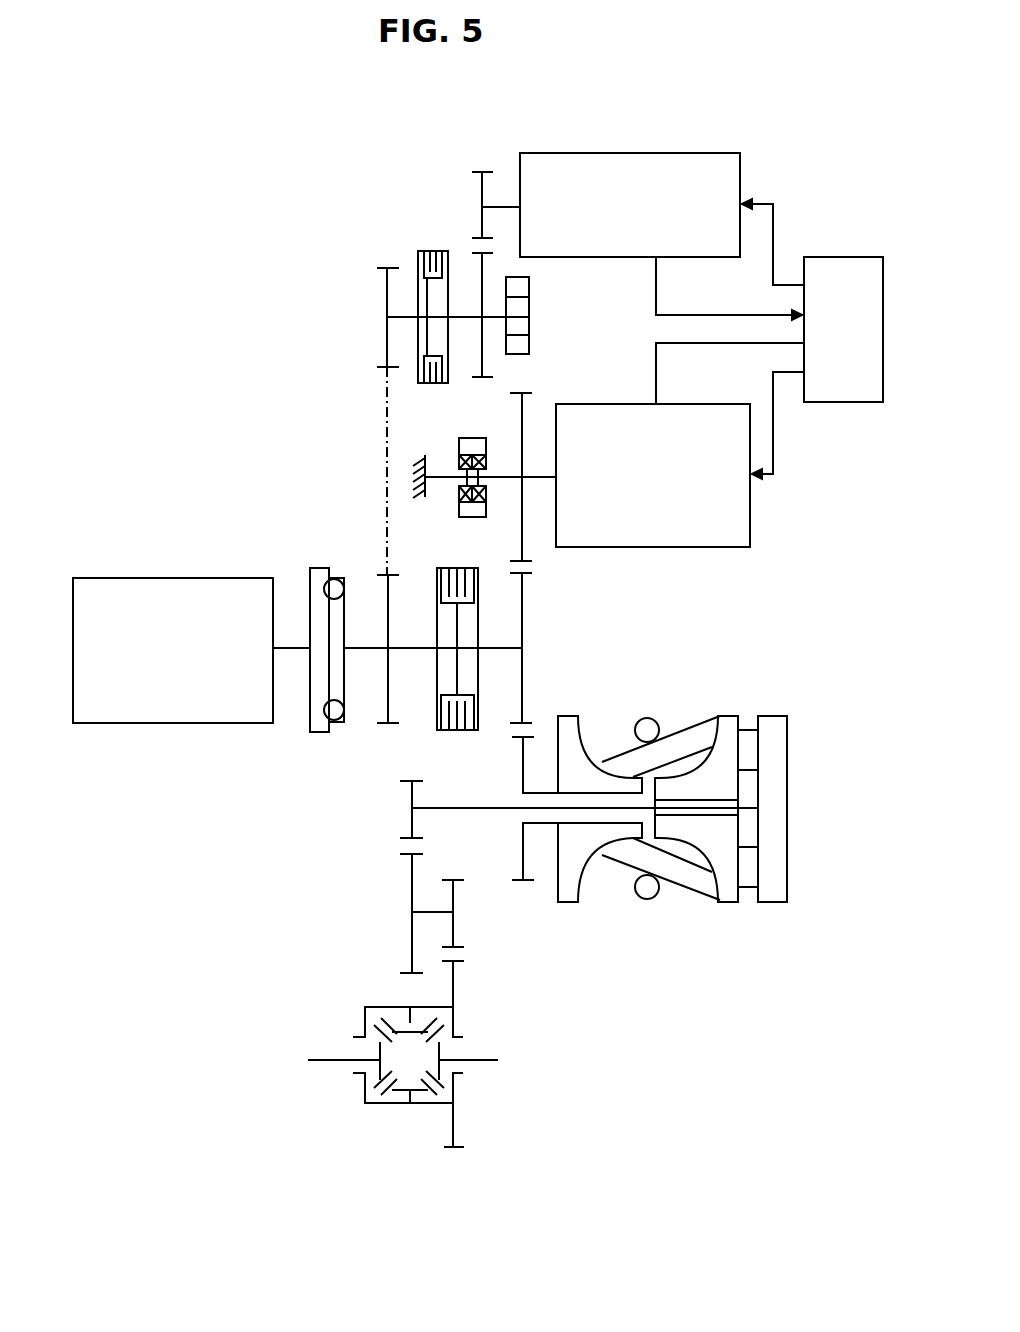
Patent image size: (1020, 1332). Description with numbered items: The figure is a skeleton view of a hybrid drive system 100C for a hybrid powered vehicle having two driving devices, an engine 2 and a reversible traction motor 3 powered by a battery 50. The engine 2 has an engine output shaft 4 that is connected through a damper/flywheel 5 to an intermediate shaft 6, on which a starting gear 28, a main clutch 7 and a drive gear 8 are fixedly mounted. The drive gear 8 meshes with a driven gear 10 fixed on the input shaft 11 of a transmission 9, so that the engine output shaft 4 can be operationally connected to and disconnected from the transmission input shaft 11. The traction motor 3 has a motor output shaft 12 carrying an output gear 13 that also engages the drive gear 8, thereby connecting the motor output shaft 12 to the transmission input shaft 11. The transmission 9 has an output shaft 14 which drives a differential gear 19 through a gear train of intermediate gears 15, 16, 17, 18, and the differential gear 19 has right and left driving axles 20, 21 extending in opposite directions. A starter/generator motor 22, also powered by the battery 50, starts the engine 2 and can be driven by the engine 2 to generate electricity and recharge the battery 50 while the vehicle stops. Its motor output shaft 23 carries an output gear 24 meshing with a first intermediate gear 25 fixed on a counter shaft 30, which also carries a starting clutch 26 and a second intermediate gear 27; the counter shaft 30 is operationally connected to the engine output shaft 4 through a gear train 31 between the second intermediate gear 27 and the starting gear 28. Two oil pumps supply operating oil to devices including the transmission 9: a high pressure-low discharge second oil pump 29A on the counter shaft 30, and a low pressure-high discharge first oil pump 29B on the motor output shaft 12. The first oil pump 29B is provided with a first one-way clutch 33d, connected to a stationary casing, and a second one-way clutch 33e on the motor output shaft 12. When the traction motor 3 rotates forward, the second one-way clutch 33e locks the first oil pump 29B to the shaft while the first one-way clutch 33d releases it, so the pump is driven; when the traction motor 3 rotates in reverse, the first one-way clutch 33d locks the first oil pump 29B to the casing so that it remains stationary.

The hybrid drive system 100C is at (233, 308).
The engine 2 is at (100, 578).
The traction motor 3 is at (733, 403).
The engine output shaft 4 is at (290, 650).
The damper/flywheel 5 is at (310, 568).
The intermediate shaft 6 is at (418, 648).
The main clutch 7 is at (441, 731).
The drive gear 8 is at (528, 576).
The transmission 9 is at (688, 702).
The driven gear 10 is at (516, 738).
The transmission input shaft 11 is at (541, 793).
The motor output shaft 12 is at (536, 478).
The output gear 13 is at (528, 394).
The output shaft 14 is at (487, 809).
The intermediate gear 15 is at (401, 782).
The intermediate gear 16 is at (402, 856).
The intermediate gear 17 is at (461, 882).
The intermediate gear 18 is at (461, 963).
The differential gear 19 is at (365, 1013).
The driving axle 20 is at (323, 1062).
The driving axle 21 is at (490, 1062).
The starter/generator motor 22 is at (718, 152).
The motor output shaft 23 is at (503, 205).
The output gear 24 is at (473, 172).
The first intermediate gear 25 is at (480, 253).
The starting clutch 26 is at (418, 252).
The second intermediate gear 27 is at (379, 270).
The starting gear 28 is at (380, 724).
The second oil pump 29A is at (530, 341).
The first oil pump 29B is at (462, 438).
The counter shaft 30 is at (462, 318).
The gear train 31 is at (385, 487).
The first one-way clutch 33d is at (464, 502).
The second one-way clutch 33e is at (482, 502).
The battery 50 is at (862, 256).